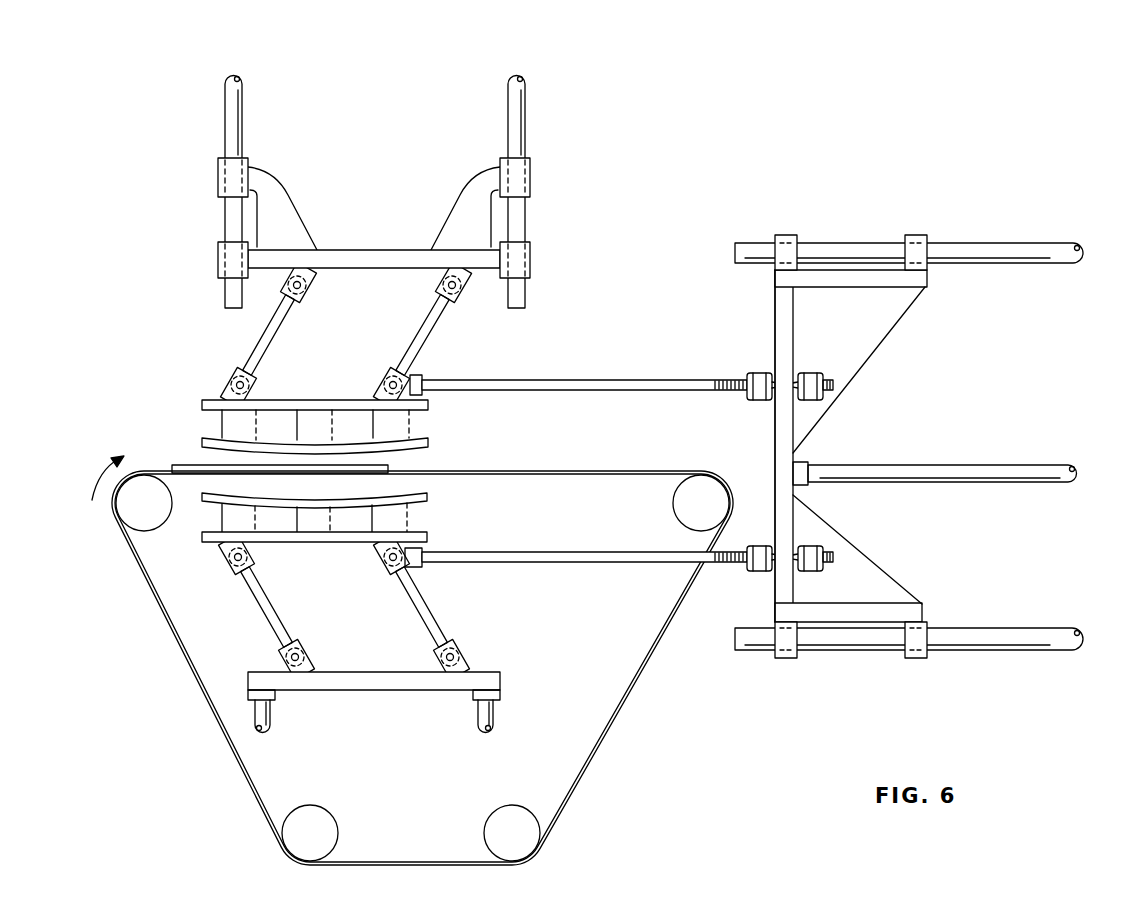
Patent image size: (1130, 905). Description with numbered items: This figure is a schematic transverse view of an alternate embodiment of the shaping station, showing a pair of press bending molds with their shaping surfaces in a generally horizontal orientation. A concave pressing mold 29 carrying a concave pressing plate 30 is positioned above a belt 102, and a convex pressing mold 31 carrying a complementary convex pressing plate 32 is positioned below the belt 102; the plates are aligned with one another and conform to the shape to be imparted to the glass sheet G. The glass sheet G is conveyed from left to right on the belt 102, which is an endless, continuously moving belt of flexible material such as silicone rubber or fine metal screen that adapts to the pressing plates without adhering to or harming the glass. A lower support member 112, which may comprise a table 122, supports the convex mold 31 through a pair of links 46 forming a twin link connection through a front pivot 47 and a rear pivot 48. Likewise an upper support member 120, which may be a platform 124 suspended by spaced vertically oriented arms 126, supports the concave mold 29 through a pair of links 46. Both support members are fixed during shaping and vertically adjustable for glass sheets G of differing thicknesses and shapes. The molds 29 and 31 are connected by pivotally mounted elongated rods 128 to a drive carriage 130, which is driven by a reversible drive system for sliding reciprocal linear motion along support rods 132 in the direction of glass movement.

The concave pressing mold 29 is at (298, 417).
The concave pressing plate 30 is at (432, 444).
The convex pressing mold 31 is at (323, 533).
The convex pressing plate 32 is at (428, 496).
The links 46 is at (418, 340).
The front pivot 47 is at (383, 385).
The rear pivot 48 is at (445, 285).
The glass sheet G is at (184, 455).
The belt 102 is at (536, 470).
The lower support member 112 is at (511, 648).
The upper support member 120 is at (356, 234).
The table 122 is at (500, 683).
The platform 124 is at (376, 254).
The arms 126 is at (229, 98).
The elongated rods 128 is at (632, 391).
The drive carriage 130 is at (777, 590).
The support rods 132 is at (1043, 255).